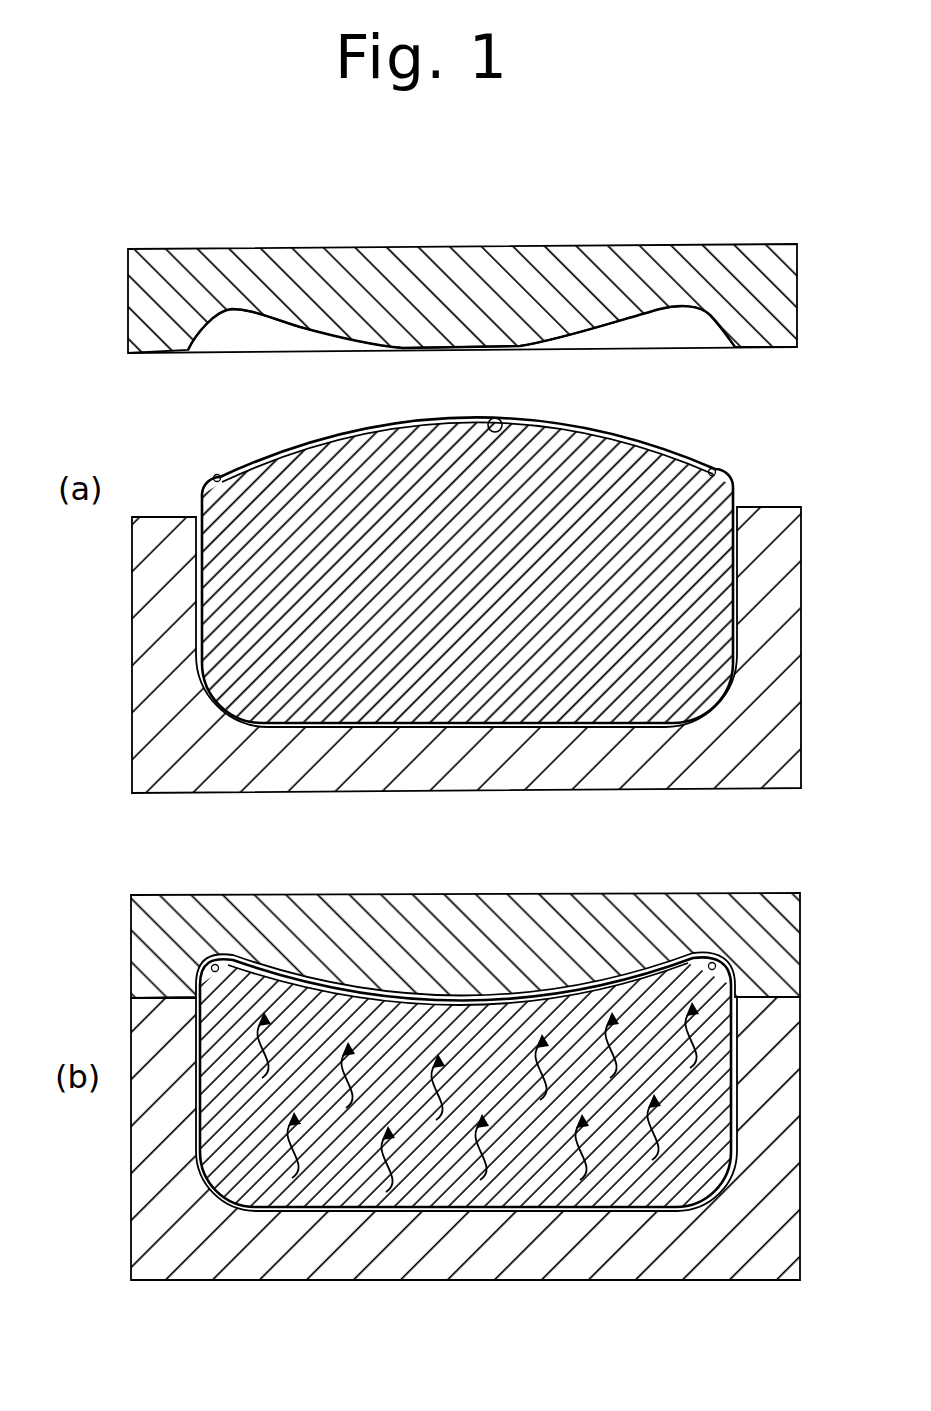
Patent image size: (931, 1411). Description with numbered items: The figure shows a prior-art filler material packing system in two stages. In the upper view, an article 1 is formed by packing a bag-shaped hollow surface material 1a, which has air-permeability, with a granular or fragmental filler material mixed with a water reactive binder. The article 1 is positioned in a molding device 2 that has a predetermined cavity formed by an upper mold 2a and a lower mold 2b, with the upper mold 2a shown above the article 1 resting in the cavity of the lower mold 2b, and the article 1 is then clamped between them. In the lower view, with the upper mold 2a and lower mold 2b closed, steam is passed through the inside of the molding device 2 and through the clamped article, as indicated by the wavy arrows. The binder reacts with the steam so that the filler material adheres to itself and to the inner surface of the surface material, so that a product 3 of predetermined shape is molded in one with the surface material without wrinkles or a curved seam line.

The article 1 is at (467, 541).
The bag-shaped hollow surface material 1a is at (491, 419).
The molding device 2 is at (503, 214).
The upper mold 2a is at (225, 263).
The lower mold 2b is at (160, 515).
The product 3 is at (642, 1010).